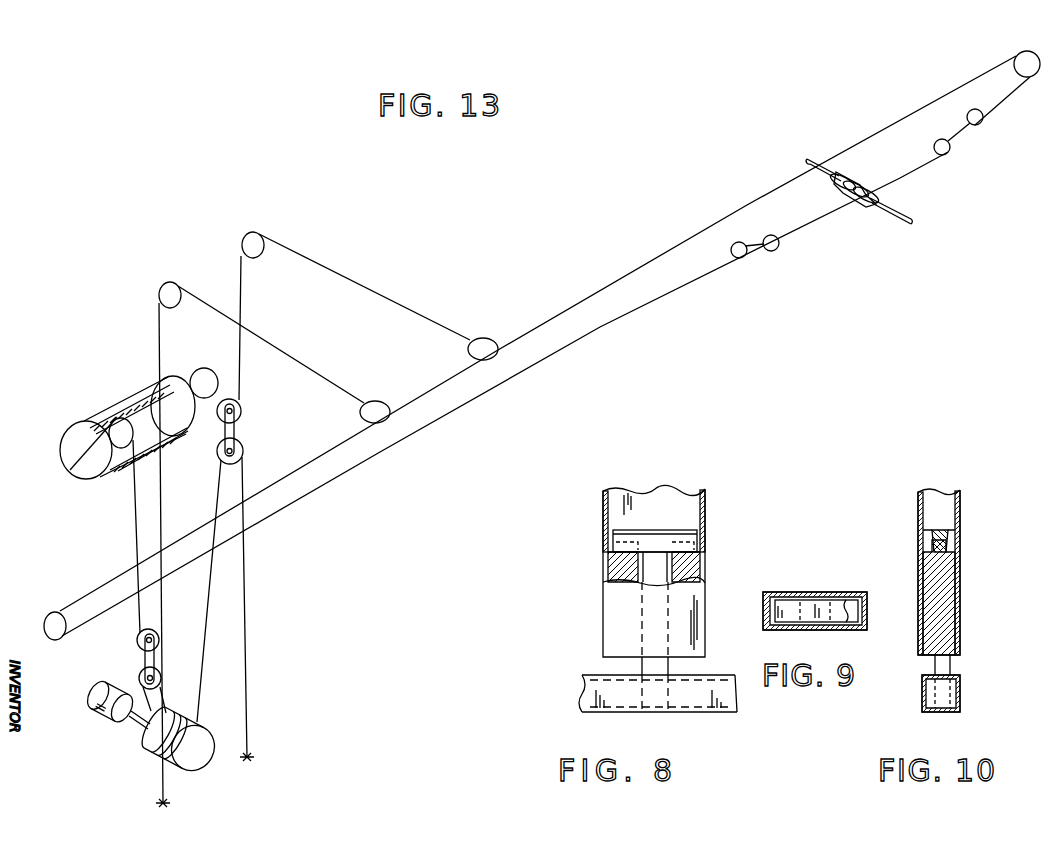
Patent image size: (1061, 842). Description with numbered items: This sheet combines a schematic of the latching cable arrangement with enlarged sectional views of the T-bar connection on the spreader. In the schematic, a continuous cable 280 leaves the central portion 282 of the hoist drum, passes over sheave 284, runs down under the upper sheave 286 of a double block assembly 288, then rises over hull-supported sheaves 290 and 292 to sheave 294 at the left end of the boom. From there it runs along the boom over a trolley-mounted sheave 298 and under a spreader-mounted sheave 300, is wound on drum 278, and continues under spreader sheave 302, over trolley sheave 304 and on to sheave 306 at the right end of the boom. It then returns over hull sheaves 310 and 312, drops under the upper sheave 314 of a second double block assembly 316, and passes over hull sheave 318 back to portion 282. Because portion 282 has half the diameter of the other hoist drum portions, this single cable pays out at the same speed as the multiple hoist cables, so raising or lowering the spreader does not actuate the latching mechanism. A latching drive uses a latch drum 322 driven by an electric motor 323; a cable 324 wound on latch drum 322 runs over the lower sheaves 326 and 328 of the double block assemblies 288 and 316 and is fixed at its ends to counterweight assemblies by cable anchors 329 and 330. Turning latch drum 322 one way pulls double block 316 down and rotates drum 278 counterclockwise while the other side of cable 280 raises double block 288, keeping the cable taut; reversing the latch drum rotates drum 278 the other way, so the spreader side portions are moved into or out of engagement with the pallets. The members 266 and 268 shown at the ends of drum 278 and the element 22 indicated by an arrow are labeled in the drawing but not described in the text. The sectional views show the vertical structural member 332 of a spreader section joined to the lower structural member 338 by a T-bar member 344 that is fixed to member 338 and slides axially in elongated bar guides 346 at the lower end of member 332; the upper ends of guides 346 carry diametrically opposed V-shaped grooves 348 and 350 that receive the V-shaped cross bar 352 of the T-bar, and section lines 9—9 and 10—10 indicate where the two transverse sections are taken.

In FIG. 13, the boom assembly 22 is at (46, 445).
In FIG. 13, the first shaft 266 is at (812, 160).
In FIG. 13, the second shaft 268 is at (912, 224).
In FIG. 13, the drum 278 is at (870, 207).
In FIG. 13, the continuous cable 280 is at (594, 296).
In FIG. 13, the central portion of hoist drum 282 is at (115, 400).
In FIG. 13, the sheave 284 is at (80, 462).
In FIG. 13, the upper sheave 286 is at (138, 641).
In FIG. 13, the double block assembly 288 is at (121, 665).
In FIG. 13, the sheave 290 is at (170, 287).
In FIG. 13, the sheave 292 is at (383, 414).
In FIG. 13, the sheave 294 is at (53, 621).
In FIG. 13, the sheave 298 is at (738, 260).
In FIG. 13, the sheave 300 is at (770, 253).
In FIG. 13, the spreader sheave 302 is at (944, 156).
In FIG. 13, the trolley sheave 304 is at (977, 126).
In FIG. 13, the sheave 306 is at (1027, 56).
In FIG. 13, the sheave 310 is at (485, 345).
In FIG. 13, the hull sheave 312 is at (254, 237).
In FIG. 13, the upper sheave 314 is at (238, 402).
In FIG. 13, the double block assembly 316 is at (254, 434).
In FIG. 13, the hull sheave 318 is at (207, 375).
In FIG. 13, the latch drum 322 is at (196, 766).
In FIG. 13, the electric motor 323 is at (100, 716).
In FIG. 13, the cable 324 is at (250, 580).
In FIG. 13, the lower sheave 326 is at (157, 675).
In FIG. 13, the lower sheave 328 is at (242, 451).
In FIG. 13, the cable anchor 329 is at (160, 802).
In FIG. 13, the cable anchor 330 is at (252, 756).
In FIG. 8, the vertical structural member 332 is at (612, 640).
In FIG. 9, the vertical structural member 332 is at (835, 628).
In FIG. 10, the vertical structural member 332 is at (940, 495).
In FIG. 8, the lower structural member 338 is at (590, 692).
In FIG. 10, the lower structural member 338 is at (925, 700).
In FIG. 8, the T-bar member 344 is at (653, 590).
In FIG. 10, the T-bar member 344 is at (945, 666).
In FIG. 8, the elongated bar guides 346 is at (616, 570).
In FIG. 10, the elongated bar guides 346 is at (939, 597).
In FIG. 8, the V-shaped groove 348 is at (606, 545).
In FIG. 9, the V-shaped groove 348 is at (765, 617).
In FIG. 8, the V-shaped groove 350 is at (703, 545).
In FIG. 9, the V-shaped groove 350 is at (862, 612).
In FIG. 10, the V-shaped groove 350 is at (925, 550).
In FIG. 8, the V-shaped cross bar 352 is at (653, 531).
In FIG. 9, the V-shaped cross bar 352 is at (815, 598).
In FIG. 10, the V-shaped cross bar 352 is at (943, 530).
In FIG. 8, the section line 9— 9 is at (563, 522).
In FIG. 8, the section line 10— 10 is at (638, 472).